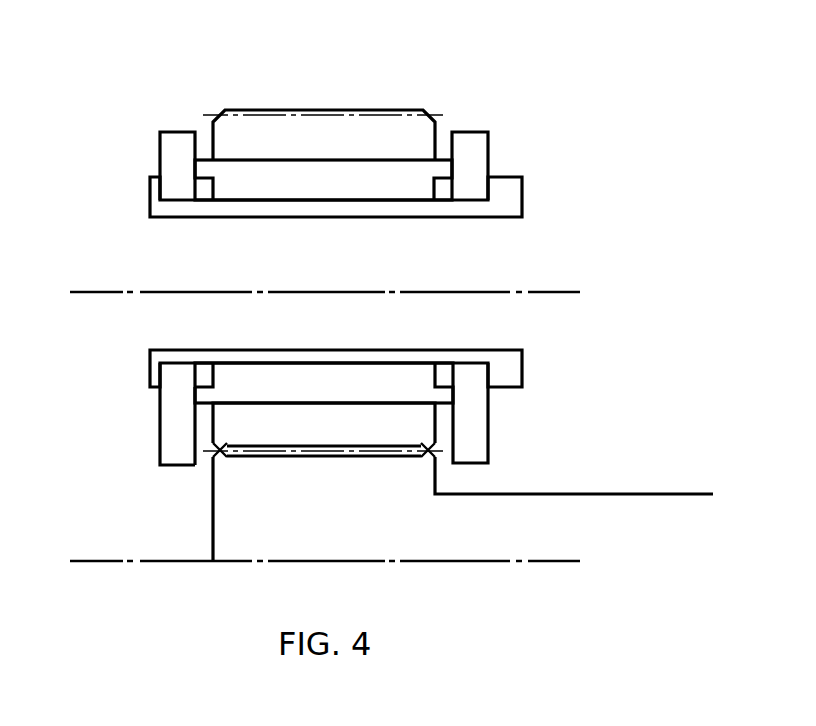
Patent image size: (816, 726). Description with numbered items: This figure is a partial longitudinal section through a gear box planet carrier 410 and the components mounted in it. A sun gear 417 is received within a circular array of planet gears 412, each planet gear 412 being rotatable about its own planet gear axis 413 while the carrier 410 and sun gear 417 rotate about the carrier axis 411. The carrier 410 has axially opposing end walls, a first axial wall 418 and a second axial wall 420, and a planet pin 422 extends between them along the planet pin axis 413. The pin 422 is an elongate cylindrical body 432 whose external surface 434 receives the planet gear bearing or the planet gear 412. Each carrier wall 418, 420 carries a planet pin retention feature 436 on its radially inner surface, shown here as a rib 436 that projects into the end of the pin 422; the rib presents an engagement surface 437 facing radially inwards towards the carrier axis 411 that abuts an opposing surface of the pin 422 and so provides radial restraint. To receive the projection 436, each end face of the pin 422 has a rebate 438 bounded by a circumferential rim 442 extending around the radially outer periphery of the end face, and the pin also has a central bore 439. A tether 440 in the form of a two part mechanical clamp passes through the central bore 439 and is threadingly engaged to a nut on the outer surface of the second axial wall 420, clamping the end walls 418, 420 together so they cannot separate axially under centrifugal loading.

The planet carrier 410 is at (128, 220).
The carrier axis 411 is at (207, 563).
The planet gear 412 is at (257, 133).
The planet pin axis 413 is at (542, 291).
The sun gear 417 is at (356, 534).
The first axial wall 418 is at (177, 400).
The second axial wall 420 is at (473, 435).
The planet pin 422 is at (427, 395).
The body 432 is at (272, 385).
The external surface 434 is at (253, 405).
The planet pin retention feature 436 is at (208, 372).
The engagement surface 437 is at (200, 378).
The rebate 438 is at (212, 190).
The central bore 439 is at (264, 266).
The tether 440 is at (453, 358).
The circumferential rim 442 is at (443, 168).